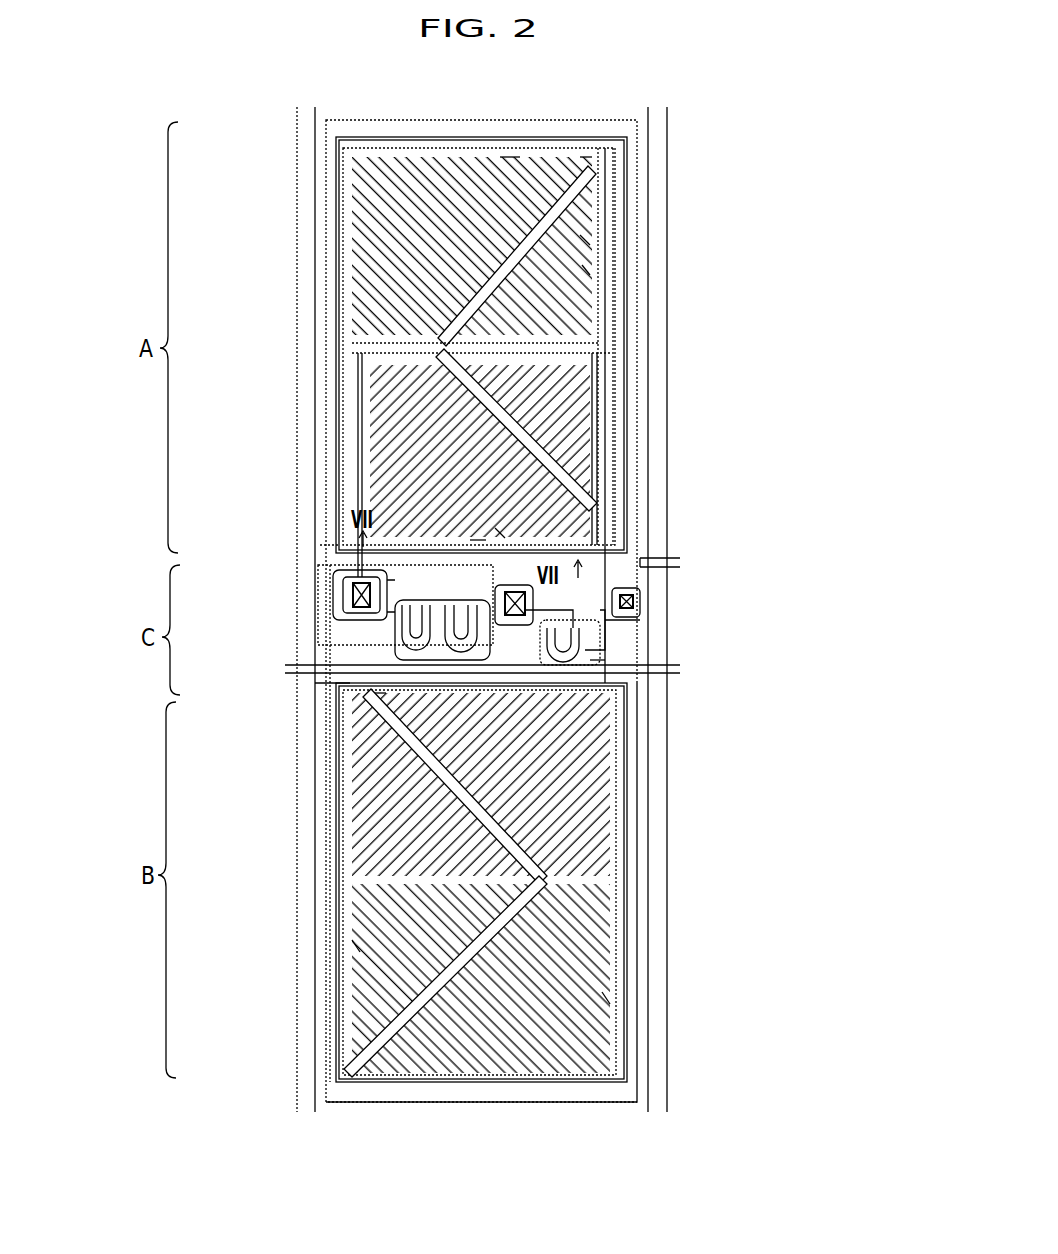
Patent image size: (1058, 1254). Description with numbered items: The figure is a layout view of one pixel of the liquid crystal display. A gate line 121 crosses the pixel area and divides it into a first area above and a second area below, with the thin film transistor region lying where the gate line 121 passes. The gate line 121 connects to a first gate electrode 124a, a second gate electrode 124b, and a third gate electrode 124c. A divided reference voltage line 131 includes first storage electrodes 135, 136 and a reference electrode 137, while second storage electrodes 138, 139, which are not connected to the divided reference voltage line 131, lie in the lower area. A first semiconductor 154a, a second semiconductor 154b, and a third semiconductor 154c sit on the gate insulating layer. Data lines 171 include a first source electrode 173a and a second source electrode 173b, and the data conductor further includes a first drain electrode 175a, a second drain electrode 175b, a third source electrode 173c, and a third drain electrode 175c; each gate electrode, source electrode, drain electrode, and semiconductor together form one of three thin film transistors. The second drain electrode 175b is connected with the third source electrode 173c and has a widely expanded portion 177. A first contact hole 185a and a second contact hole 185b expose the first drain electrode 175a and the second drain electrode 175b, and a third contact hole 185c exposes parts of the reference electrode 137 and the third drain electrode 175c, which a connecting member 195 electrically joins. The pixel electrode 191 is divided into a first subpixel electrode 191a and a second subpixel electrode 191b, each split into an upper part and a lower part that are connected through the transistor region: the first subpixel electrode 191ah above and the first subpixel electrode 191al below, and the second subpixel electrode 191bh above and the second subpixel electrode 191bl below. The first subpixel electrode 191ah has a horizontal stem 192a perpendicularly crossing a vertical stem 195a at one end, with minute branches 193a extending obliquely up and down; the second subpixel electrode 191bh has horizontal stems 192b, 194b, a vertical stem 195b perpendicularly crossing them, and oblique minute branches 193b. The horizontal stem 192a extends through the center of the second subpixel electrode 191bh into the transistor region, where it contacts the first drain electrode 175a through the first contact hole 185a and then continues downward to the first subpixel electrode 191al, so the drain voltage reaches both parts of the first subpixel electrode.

The gate line 121 is at (290, 660).
The first gate electrode 124a is at (330, 556).
The second gate electrode 124b is at (500, 533).
The third gate electrode 124c is at (620, 640).
The divided reference voltage line 131 is at (672, 567).
The first storage electrode 135 is at (640, 455).
The first storage electrode 136 is at (392, 120).
The reference electrode 137 is at (645, 580).
The second storage electrode 138 is at (637, 907).
The second storage electrode 139 is at (615, 1102).
The first semiconductor 154a is at (330, 545).
The second semiconductor 154b is at (478, 540).
The third semiconductor 154c is at (600, 660).
The data line 171 is at (297, 138).
The first source electrode 173a is at (340, 613).
The second source electrode 173b is at (378, 692).
The third source electrode 173c is at (617, 625).
The first drain electrode 175a is at (340, 568).
The second drain electrode 175b is at (378, 680).
The third drain electrode 175c is at (610, 650).
The widely expanded portion 177 is at (593, 540).
The first contact hole 185a is at (345, 598).
The second contact hole 185b is at (623, 523).
The third contact hole 185c is at (643, 592).
The pixel electrode 191 is at (798, 1008).
The first subpixel electrode 191a is at (336, 288).
The second subpixel electrode 191b is at (336, 818).
The first subpixel electrode in region A 191ah is at (592, 270).
The first subpixel electrode in region B 191al is at (352, 946).
The second subpixel electrode in region A 191bh is at (510, 157).
The second subpixel electrode in region B 191bl is at (610, 1000).
The horizontal stem 192a is at (587, 350).
The horizontal stem 192b is at (545, 880).
The minute branches 193a is at (590, 240).
The minute branches 193b is at (352, 213).
The horizontal stem 194b is at (590, 157).
The connecting member 195 is at (650, 612).
The vertical stem 195a is at (595, 388).
The vertical stem 195b is at (352, 178).